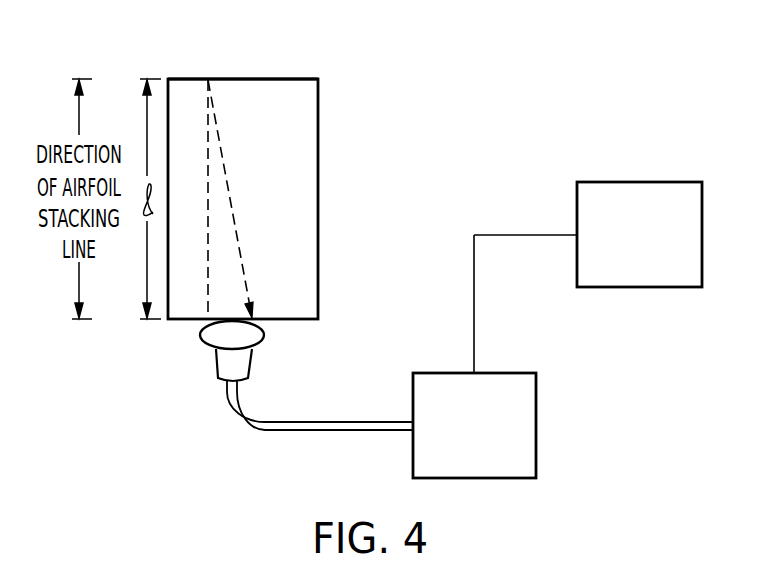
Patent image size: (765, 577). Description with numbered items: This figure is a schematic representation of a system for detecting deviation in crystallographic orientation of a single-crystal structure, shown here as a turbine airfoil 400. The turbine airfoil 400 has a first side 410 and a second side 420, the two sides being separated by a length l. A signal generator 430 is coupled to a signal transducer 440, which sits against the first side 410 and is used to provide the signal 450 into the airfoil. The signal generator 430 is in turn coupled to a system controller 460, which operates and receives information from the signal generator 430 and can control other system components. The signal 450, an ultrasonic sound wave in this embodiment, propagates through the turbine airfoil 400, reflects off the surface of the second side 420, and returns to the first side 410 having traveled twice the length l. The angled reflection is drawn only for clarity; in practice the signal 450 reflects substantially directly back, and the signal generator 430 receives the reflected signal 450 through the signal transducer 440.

The turbine airfoil 400 is at (377, 138).
The first side 410 is at (302, 320).
The second side 420 is at (280, 78).
The signal generator 430 is at (537, 428).
The signal transducer 440 is at (219, 365).
The signal 450 is at (224, 165).
The system controller 460 is at (640, 181).